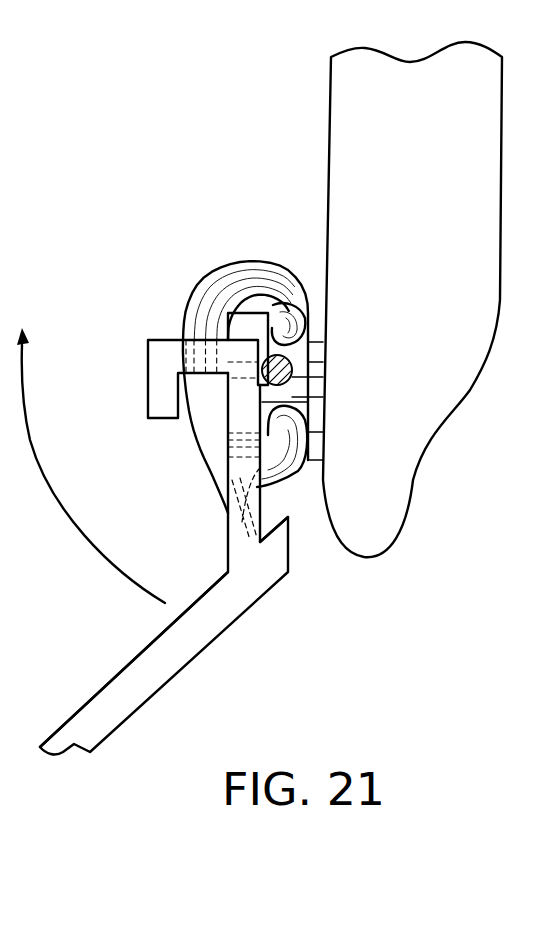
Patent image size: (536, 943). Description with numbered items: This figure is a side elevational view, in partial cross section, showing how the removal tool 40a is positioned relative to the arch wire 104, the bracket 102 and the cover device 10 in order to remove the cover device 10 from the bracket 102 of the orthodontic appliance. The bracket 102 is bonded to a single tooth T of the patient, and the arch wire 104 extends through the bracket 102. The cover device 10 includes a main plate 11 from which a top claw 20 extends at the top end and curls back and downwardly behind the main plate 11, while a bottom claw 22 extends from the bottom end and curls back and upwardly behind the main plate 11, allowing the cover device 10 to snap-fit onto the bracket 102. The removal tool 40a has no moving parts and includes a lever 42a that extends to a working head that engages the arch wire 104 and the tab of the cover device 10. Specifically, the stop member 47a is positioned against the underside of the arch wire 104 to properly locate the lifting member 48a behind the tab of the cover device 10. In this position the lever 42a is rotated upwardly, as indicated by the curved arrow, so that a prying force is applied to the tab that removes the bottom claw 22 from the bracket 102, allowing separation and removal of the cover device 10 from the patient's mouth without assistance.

The tooth T is at (362, 108).
The cover device 10 is at (191, 279).
The main plate 11 is at (172, 320).
The top claw 20 is at (248, 262).
The bottom claw 22 is at (285, 458).
The bracket 102 is at (262, 330).
The arch wire 104 is at (279, 374).
The stop member 47a is at (272, 392).
The removal tool 40a is at (255, 563).
The lever 42a is at (148, 700).
The lifting member 48a is at (288, 548).